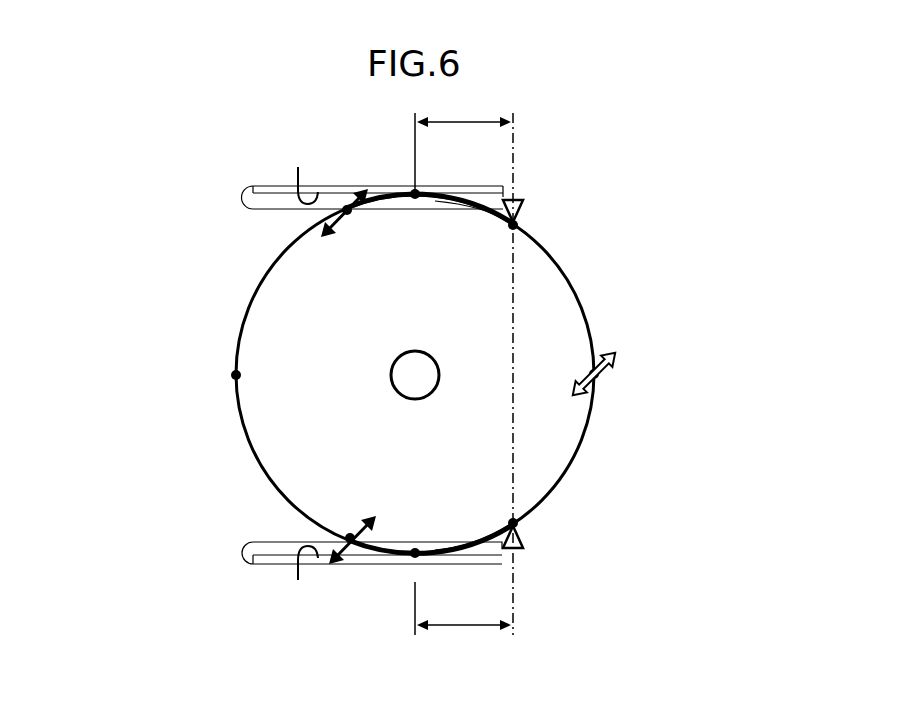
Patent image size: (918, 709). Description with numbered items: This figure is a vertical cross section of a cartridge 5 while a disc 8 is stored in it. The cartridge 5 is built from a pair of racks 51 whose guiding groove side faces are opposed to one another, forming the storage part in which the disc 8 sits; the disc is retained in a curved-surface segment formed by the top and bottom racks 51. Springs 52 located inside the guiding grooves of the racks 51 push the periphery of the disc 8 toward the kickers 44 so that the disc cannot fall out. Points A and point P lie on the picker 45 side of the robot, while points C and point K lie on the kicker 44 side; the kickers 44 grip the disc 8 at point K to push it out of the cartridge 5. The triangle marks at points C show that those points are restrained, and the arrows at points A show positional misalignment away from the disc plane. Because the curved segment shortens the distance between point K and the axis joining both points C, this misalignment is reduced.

The cartridge 5 is at (607, 130).
The disc 8 is at (545, 268).
The rack 51 is at (265, 200).
The spring 52 is at (318, 195).
The picker 45 is at (212, 298).
The kicker 44 is at (757, 298).